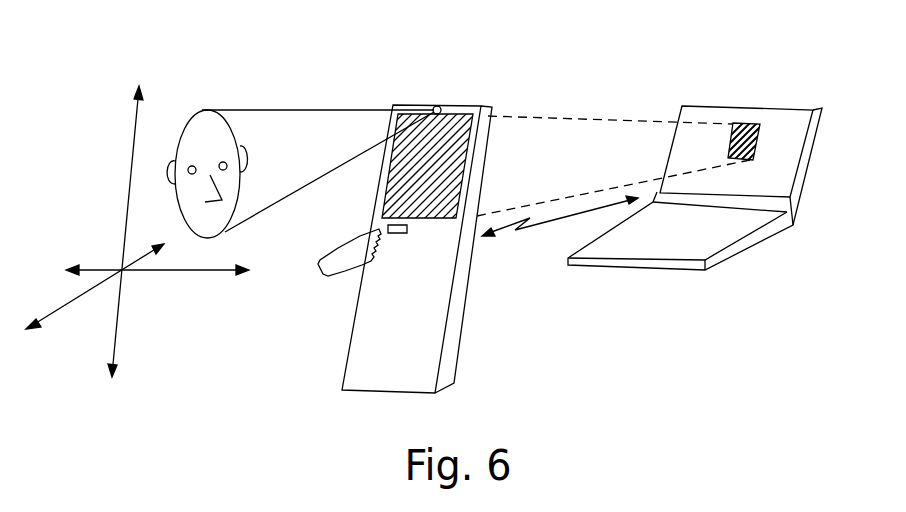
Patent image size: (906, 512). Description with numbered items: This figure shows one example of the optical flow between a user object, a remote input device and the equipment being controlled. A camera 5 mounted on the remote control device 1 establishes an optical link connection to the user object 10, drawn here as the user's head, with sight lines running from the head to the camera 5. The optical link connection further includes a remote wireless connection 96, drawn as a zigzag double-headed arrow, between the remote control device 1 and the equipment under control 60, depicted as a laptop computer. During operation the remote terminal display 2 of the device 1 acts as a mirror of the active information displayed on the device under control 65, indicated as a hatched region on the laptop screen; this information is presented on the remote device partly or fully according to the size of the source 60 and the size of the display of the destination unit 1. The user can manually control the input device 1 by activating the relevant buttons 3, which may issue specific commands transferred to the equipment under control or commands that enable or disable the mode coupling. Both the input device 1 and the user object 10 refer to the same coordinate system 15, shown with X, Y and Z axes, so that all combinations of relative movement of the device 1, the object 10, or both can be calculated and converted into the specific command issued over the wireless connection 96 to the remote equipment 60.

The remote control device 1 is at (417, 235).
The remote terminal display 2 is at (448, 148).
The buttons 3 is at (409, 232).
The camera 5 is at (434, 107).
The user object 10 is at (300, 157).
The coordinate system 15 is at (138, 235).
The equipment under control 60 is at (752, 105).
The active information displayed on the device under control 65 is at (760, 138).
The remote wireless connection 96 is at (560, 230).